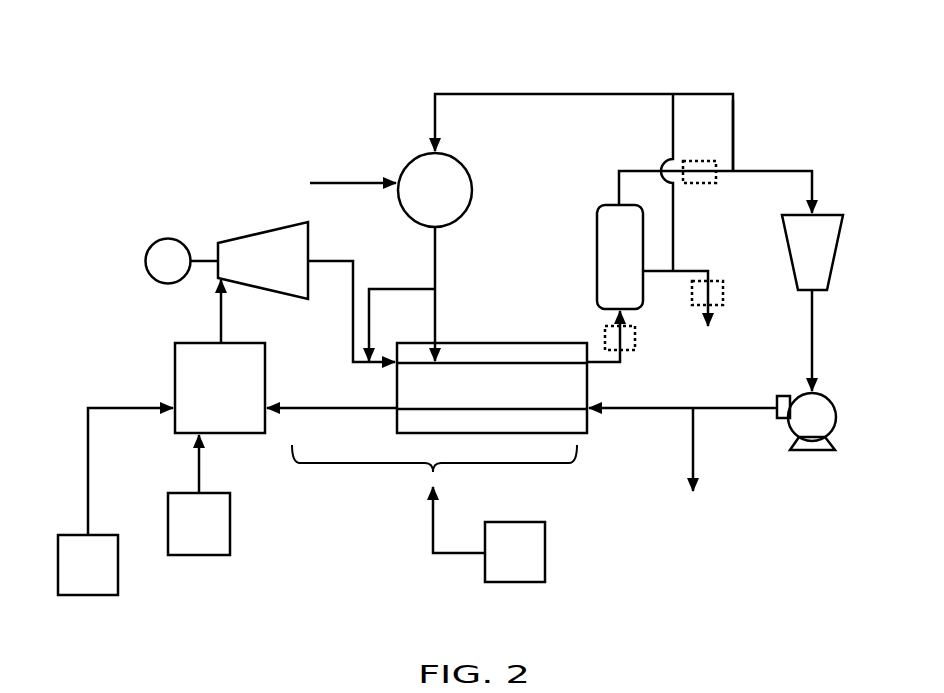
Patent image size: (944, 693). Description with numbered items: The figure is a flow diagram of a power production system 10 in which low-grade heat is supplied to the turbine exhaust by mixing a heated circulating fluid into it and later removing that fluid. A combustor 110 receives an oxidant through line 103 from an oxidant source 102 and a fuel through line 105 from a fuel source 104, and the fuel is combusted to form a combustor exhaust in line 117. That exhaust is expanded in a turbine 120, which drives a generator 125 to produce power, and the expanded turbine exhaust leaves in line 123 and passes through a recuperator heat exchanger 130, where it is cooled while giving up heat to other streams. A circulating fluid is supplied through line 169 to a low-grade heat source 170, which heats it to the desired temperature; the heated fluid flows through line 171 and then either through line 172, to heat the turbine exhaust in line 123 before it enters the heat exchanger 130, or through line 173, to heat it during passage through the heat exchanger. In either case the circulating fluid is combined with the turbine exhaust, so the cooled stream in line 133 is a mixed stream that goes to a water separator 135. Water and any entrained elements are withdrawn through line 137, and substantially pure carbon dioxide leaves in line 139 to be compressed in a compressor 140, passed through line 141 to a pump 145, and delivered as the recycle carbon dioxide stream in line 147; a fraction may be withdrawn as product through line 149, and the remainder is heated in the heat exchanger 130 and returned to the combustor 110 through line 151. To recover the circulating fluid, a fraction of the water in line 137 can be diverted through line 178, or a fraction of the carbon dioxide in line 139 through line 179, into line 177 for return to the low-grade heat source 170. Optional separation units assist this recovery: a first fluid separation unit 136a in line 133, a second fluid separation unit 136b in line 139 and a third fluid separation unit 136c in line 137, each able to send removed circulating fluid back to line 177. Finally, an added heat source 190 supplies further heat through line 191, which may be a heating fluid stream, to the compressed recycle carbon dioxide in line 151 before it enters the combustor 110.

The power production system 10 is at (118, 50).
The oxidant source 102 is at (106, 578).
The oxidant line 103 is at (130, 455).
The fuel source 104 is at (217, 537).
The fuel line 105 is at (178, 464).
The combustor 110 is at (236, 401).
The combustor exhaust line 117 is at (201, 311).
The turbine 120 is at (281, 276).
The turbine exhaust line 123 is at (351, 299).
The generator 125 is at (162, 237).
The recuperator heat exchanger 130 is at (544, 343).
The cooled turbine exhaust line 133 is at (606, 351).
The water separator 135 is at (638, 260).
The first fluid separation unit 136a is at (635, 336).
The second fluid separation unit 136b is at (716, 179).
The third fluid separation unit 136c is at (723, 300).
The water line 137 is at (675, 297).
The carbon dioxide line 139 is at (696, 191).
The compressor 140 is at (830, 253).
The compressed carbon dioxide line 141 is at (832, 340).
The pump 145 is at (830, 430).
The recycle carbon dioxide line 147 is at (683, 397).
The carbon dioxide product line 149 is at (674, 449).
The heated recycle carbon dioxide line 151 is at (332, 397).
The circulating fluid supply line 169 is at (353, 174).
The low-grade heat source 170 is at (453, 203).
The heated circulating fluid line 171 is at (453, 258).
The first circulating fluid pathway 172 is at (402, 325).
The second circulating fluid pathway 173 is at (454, 325).
The circulating fluid return line 177 is at (584, 120).
The water diversion line 178 is at (686, 182).
The carbon dioxide diversion line 179 is at (752, 135).
The added heat source 190 is at (533, 565).
The added heat line 191 is at (434, 499).